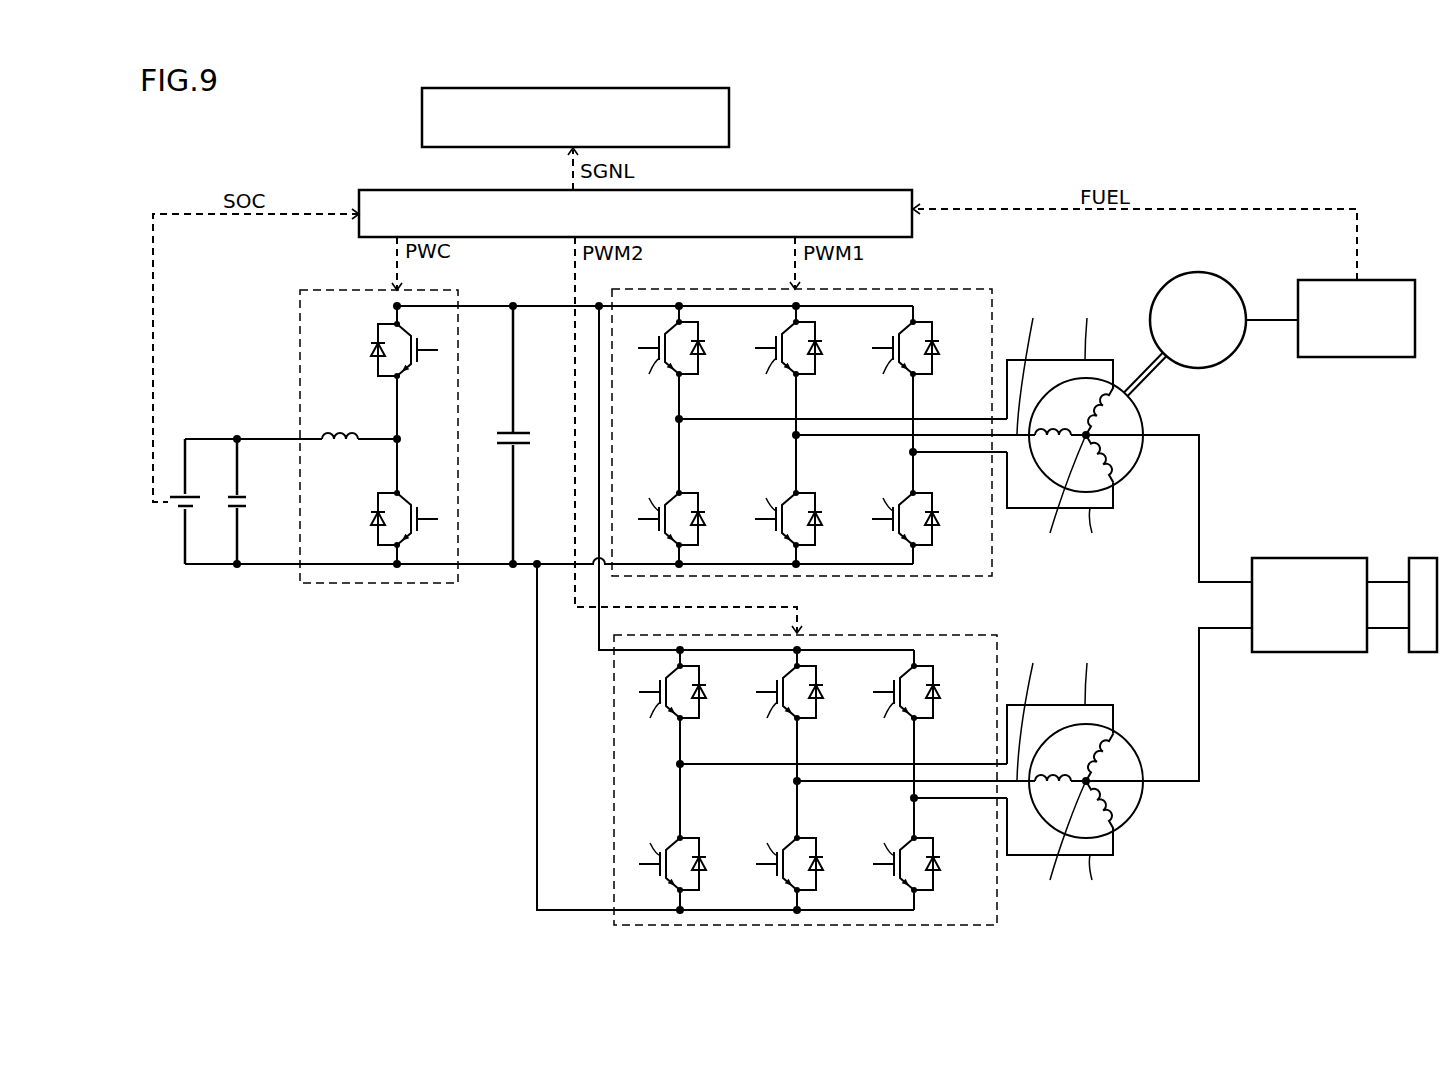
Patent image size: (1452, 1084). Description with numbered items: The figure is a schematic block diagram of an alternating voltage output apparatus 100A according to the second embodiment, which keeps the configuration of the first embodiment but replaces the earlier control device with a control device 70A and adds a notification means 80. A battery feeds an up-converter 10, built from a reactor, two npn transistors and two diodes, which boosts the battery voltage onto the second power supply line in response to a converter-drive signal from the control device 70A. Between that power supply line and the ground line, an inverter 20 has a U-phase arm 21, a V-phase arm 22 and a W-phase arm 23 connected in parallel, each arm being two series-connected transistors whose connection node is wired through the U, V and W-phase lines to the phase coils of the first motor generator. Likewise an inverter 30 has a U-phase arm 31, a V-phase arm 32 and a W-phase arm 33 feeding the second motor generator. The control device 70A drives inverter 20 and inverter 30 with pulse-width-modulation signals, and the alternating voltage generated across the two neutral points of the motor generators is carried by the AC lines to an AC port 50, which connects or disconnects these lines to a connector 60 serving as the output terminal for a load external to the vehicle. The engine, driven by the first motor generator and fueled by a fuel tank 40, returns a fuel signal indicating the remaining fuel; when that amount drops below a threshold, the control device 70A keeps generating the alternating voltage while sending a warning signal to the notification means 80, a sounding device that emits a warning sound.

The alternating voltage output apparatus 100A is at (226, 138).
The up-converter 10 is at (379, 453).
The inverter 20 is at (890, 577).
The inverter 30 is at (890, 927).
The fuel tank 40 is at (1385, 280).
The AC port 50 is at (1280, 558).
The connector 60 is at (1422, 558).
The control device 70A is at (830, 189).
The notification means 80 is at (731, 119).
The U-phase arm 21 is at (674, 430).
The V-phase arm 22 is at (791, 447).
The W-phase arm 23 is at (908, 464).
The U-phase arm 31 is at (675, 775).
The V-phase arm 32 is at (792, 793).
The W-phase arm 33 is at (909, 810).